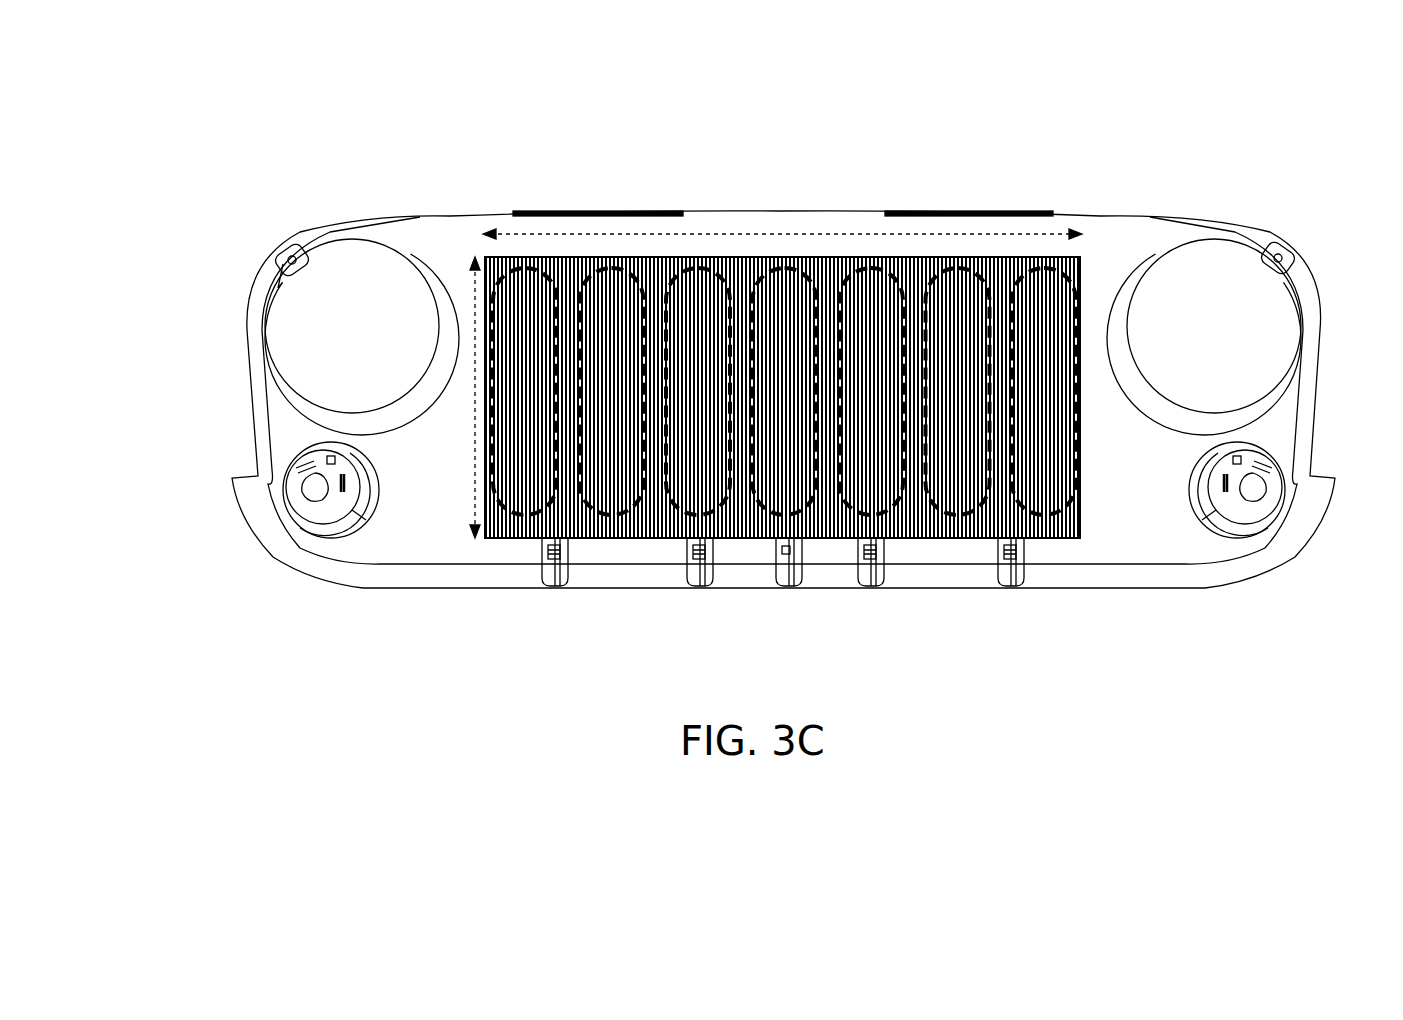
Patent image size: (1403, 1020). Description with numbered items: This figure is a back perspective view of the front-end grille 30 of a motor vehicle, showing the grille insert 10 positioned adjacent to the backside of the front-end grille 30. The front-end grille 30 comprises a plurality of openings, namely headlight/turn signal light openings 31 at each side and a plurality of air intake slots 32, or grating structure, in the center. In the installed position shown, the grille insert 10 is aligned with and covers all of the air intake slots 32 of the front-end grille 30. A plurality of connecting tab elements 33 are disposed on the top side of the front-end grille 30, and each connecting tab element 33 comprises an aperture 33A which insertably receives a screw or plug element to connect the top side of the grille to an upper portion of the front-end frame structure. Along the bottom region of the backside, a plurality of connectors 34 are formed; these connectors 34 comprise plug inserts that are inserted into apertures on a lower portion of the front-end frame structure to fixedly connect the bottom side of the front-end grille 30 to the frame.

The grille insert 10 is at (733, 258).
The front-end grille 30 is at (408, 208).
The headlight/turn signal light openings 31 is at (322, 345).
The air intake slots 32 is at (782, 268).
The connecting tab elements 33 is at (597, 208).
The aperture 33A is at (288, 250).
The connectors 34 is at (995, 578).